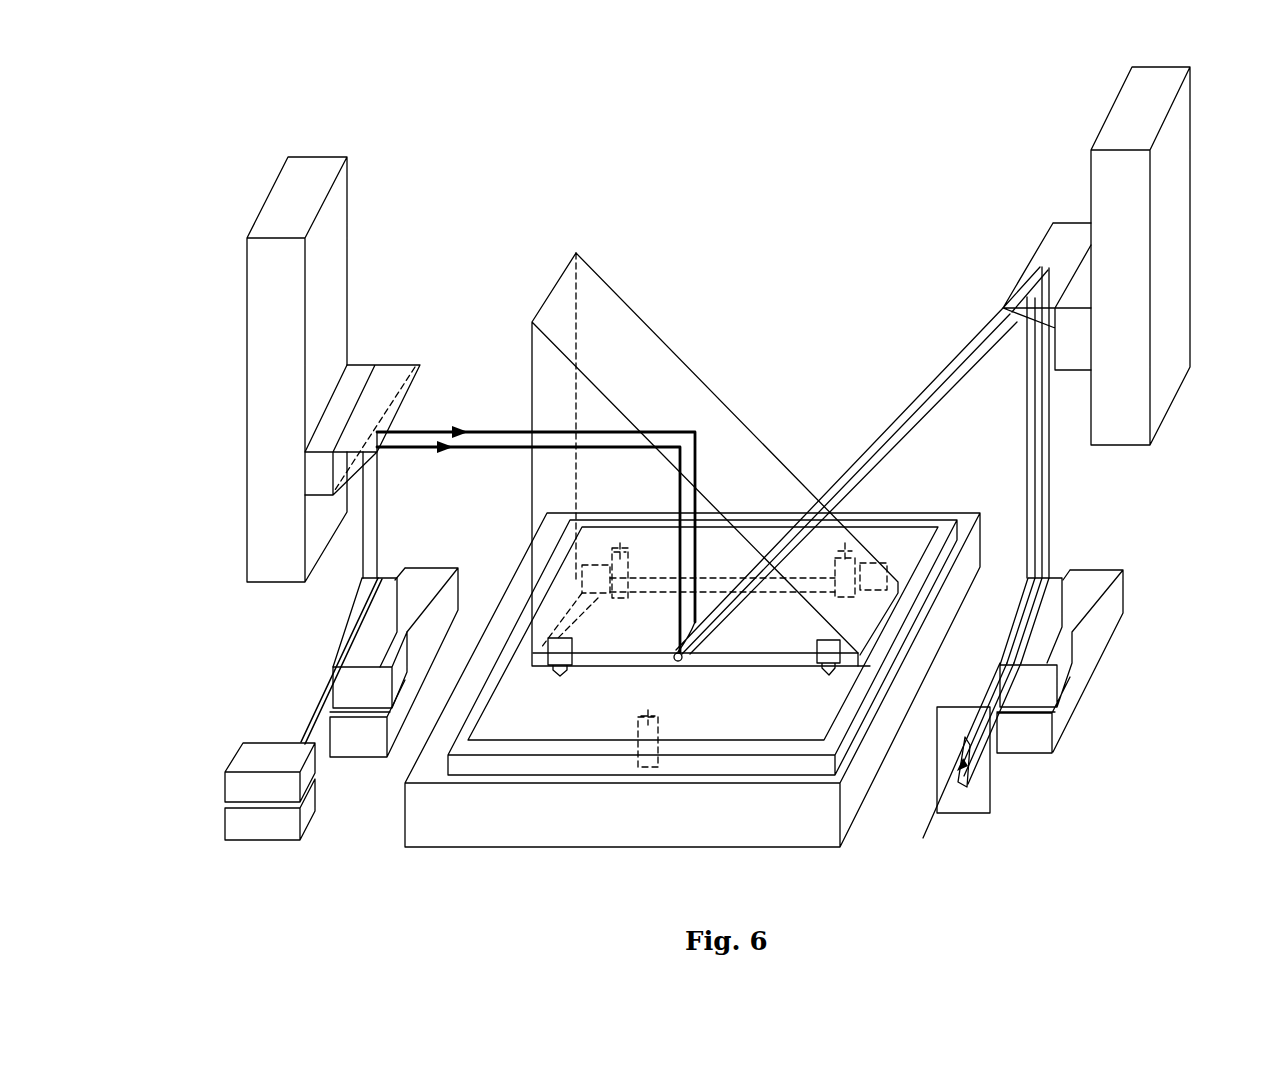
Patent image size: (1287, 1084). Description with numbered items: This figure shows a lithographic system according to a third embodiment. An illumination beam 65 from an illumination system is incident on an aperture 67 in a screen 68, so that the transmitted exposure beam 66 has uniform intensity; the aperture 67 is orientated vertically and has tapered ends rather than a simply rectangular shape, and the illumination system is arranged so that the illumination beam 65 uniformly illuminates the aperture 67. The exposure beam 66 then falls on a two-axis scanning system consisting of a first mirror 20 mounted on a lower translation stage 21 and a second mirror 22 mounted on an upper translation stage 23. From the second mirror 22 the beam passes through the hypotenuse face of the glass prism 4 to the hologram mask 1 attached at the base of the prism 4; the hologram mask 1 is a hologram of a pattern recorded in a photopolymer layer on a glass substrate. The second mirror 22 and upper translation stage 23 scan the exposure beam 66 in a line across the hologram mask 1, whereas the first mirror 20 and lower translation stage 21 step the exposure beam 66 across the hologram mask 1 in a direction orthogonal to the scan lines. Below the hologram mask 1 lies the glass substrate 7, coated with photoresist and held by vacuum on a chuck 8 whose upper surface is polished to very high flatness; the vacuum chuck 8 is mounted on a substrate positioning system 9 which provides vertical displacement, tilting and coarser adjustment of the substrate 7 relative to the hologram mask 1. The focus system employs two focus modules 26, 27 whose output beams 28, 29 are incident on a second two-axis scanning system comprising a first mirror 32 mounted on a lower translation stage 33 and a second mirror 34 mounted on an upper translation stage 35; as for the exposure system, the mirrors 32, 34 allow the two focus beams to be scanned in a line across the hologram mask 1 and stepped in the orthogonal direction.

The hologram mask 1 is at (860, 660).
The glass prism 4 is at (672, 377).
The glass substrate 7 is at (535, 733).
The vacuum chuck 8 is at (467, 770).
The substrate positioning system 9 is at (655, 833).
The first mirror 20 is at (1057, 578).
The lower translation stage 21 is at (1092, 673).
The second mirror 22 is at (1053, 223).
The upper translation stage 23 is at (1187, 268).
The focus module 26 is at (225, 830).
The focus module 27 is at (223, 783).
The focus beam 28 is at (317, 740).
The focus beam 29 is at (317, 708).
The first mirror 32 is at (353, 618).
The lower translation stage 33 is at (365, 752).
The second mirror 34 is at (393, 370).
The upper translation stage 35 is at (250, 382).
The illumination beam 65 is at (930, 833).
The exposure beam 66 is at (1043, 482).
The aperture 67 is at (965, 783).
The screen 68 is at (985, 808).